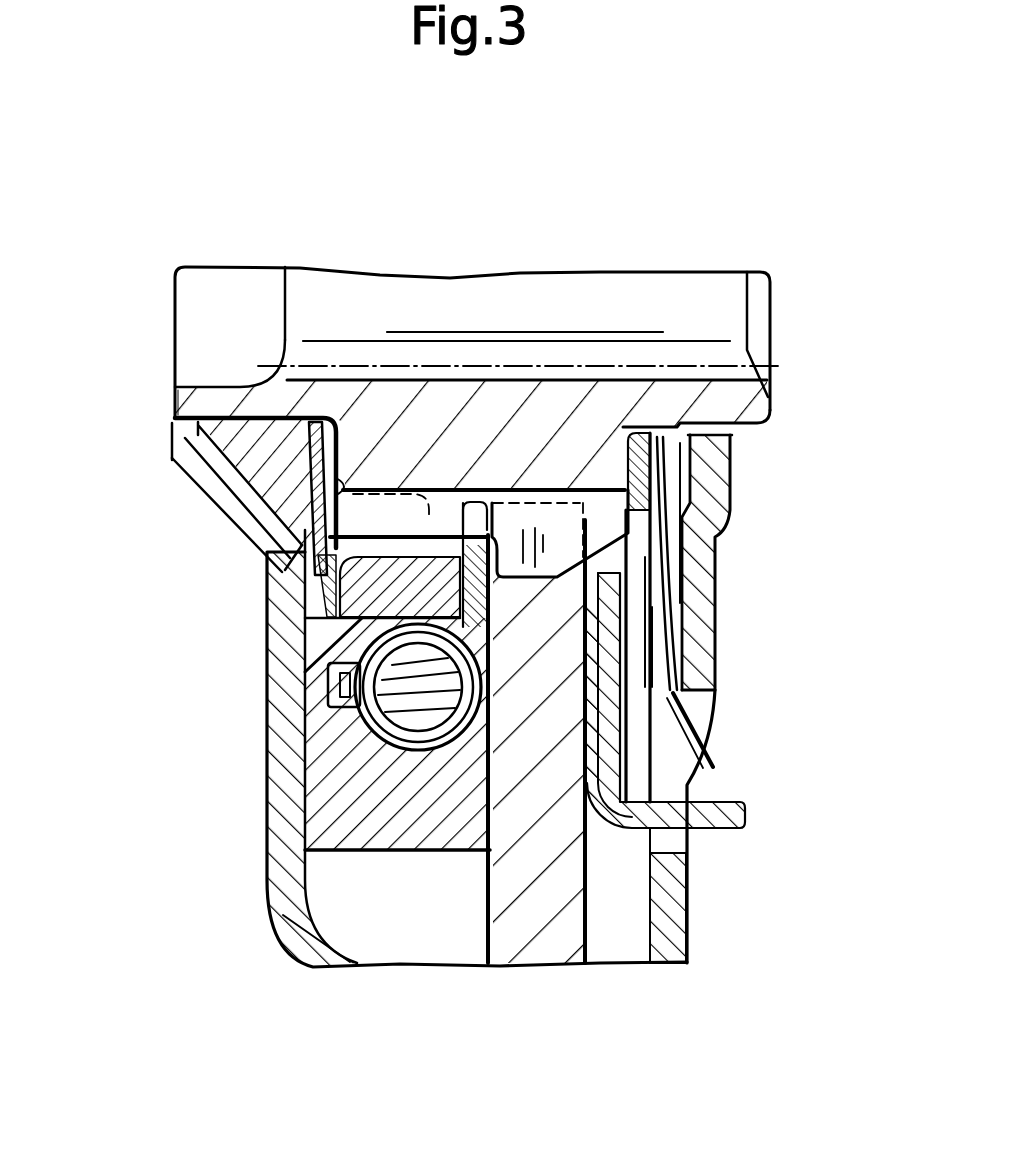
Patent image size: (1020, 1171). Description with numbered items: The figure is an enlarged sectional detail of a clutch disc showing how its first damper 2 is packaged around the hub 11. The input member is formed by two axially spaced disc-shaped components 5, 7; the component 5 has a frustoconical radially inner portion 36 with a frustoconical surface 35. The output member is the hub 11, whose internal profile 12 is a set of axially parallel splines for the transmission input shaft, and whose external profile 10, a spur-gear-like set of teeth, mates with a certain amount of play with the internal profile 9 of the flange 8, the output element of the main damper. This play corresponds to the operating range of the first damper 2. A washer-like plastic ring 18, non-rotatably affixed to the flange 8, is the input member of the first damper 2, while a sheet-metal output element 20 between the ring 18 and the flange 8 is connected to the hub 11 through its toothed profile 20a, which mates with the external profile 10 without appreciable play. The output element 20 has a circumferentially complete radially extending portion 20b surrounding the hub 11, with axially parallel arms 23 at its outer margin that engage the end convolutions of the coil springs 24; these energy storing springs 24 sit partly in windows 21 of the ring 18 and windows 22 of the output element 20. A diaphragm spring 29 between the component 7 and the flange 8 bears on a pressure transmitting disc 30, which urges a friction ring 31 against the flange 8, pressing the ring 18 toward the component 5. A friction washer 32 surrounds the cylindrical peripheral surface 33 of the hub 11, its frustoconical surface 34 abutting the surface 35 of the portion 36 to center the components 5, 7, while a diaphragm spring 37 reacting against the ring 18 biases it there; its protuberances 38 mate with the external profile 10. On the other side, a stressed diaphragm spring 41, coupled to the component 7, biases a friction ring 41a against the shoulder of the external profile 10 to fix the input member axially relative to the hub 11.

The first damper 2 is at (318, 740).
The disc-shaped component 5 is at (318, 945).
The disc-shaped component 7 is at (686, 962).
The flange 8 is at (521, 913).
The internal profile 9 is at (563, 523).
The external profile 10 is at (530, 520).
The hub 11 is at (745, 414).
The internal profile 12 is at (732, 362).
The ring 18 is at (303, 828).
The output element 20 is at (455, 588).
The toothed profile 20a is at (472, 497).
The radially extending portion 20b is at (268, 550).
The windows 21 is at (333, 667).
The windows 22 is at (430, 680).
The arms 23 is at (422, 680).
The coil springs 24 is at (451, 730).
The diaphragm spring 29 is at (638, 708).
The pressure transmitting disc 30 is at (613, 667).
The friction ring 31 is at (605, 635).
The friction washer 32 is at (248, 400).
The cylindrical peripheral surface 33 is at (270, 410).
The frustoconical surface 34 is at (246, 491).
The frustoconical surface 35 is at (246, 457).
The frustoconical radially inner portion 36 is at (175, 456).
The diaphragm spring 37 is at (300, 568).
The protuberances 38 is at (367, 486).
The diaphragm spring 41 is at (658, 547).
The friction ring 41a is at (648, 473).